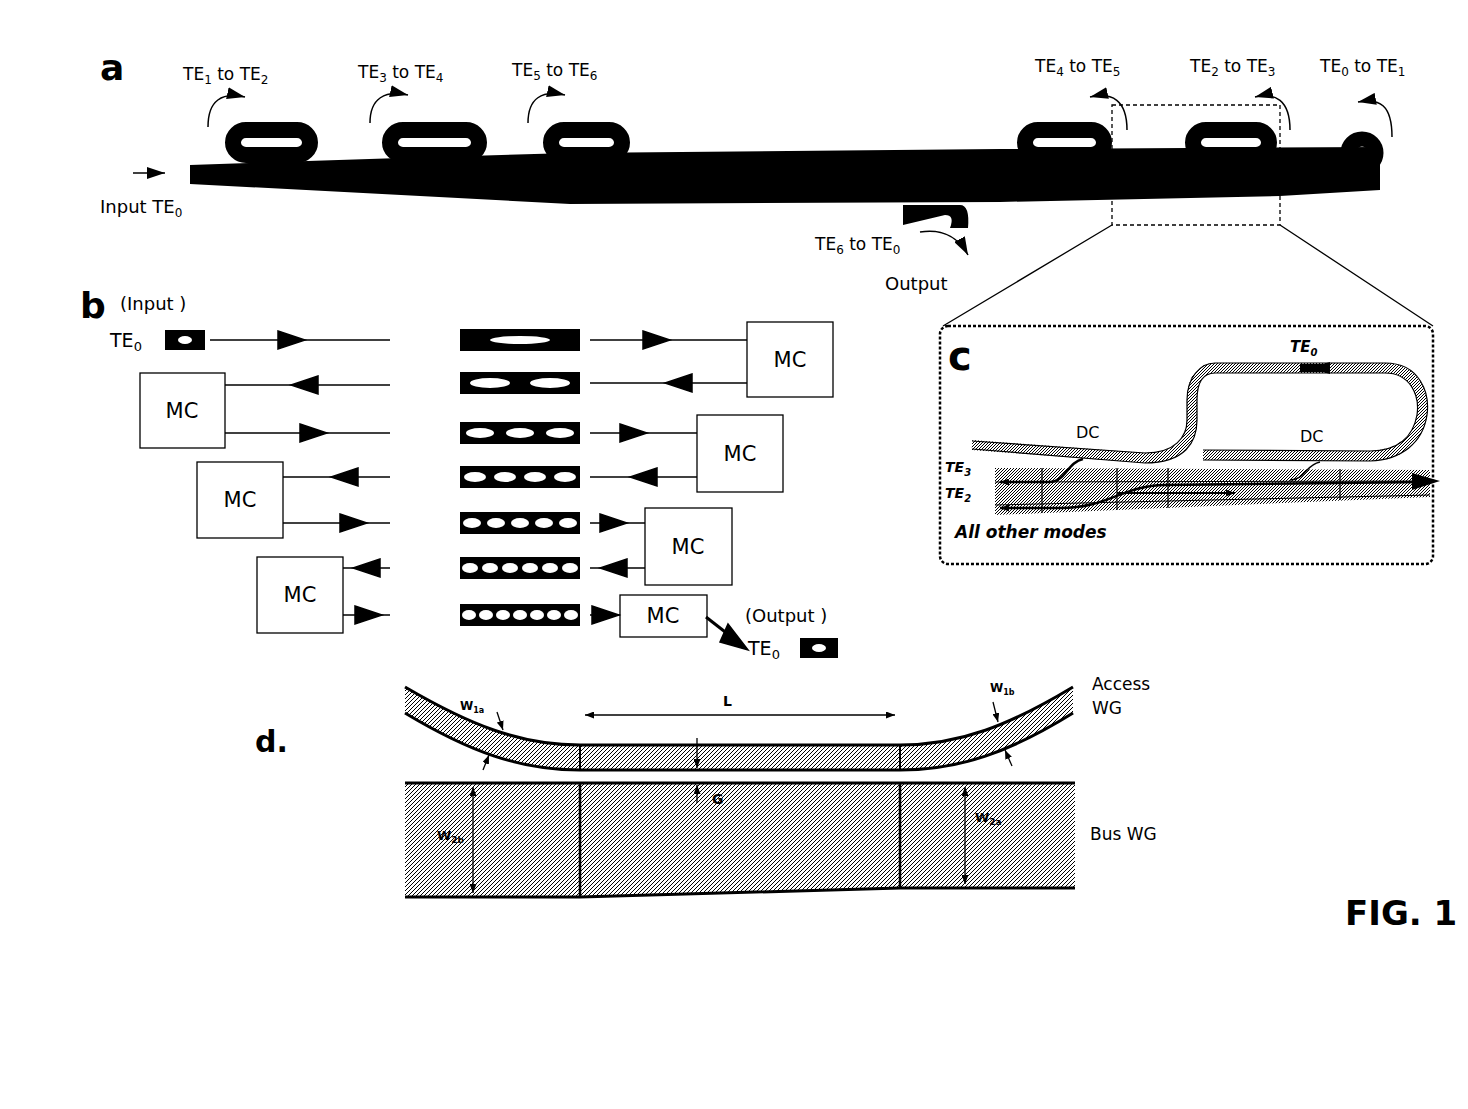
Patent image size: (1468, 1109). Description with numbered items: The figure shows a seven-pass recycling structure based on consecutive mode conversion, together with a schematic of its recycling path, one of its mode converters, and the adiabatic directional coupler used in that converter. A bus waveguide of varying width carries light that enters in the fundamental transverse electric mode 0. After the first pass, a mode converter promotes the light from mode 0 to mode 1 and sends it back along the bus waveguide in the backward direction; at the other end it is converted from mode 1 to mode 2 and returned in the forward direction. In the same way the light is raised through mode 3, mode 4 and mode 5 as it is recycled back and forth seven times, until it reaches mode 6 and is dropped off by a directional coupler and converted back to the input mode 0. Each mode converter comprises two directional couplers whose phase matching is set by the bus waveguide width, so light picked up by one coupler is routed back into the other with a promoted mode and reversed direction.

The TE0 mode 0 is at (492, 341).
The TE1 mode 1 is at (492, 384).
The TE2 mode 2 is at (492, 434).
The TE3 mode 3 is at (492, 478).
The TE4 mode 4 is at (492, 524).
The TE5 mode 5 is at (492, 569).
The TE6 mode 6 is at (492, 616).